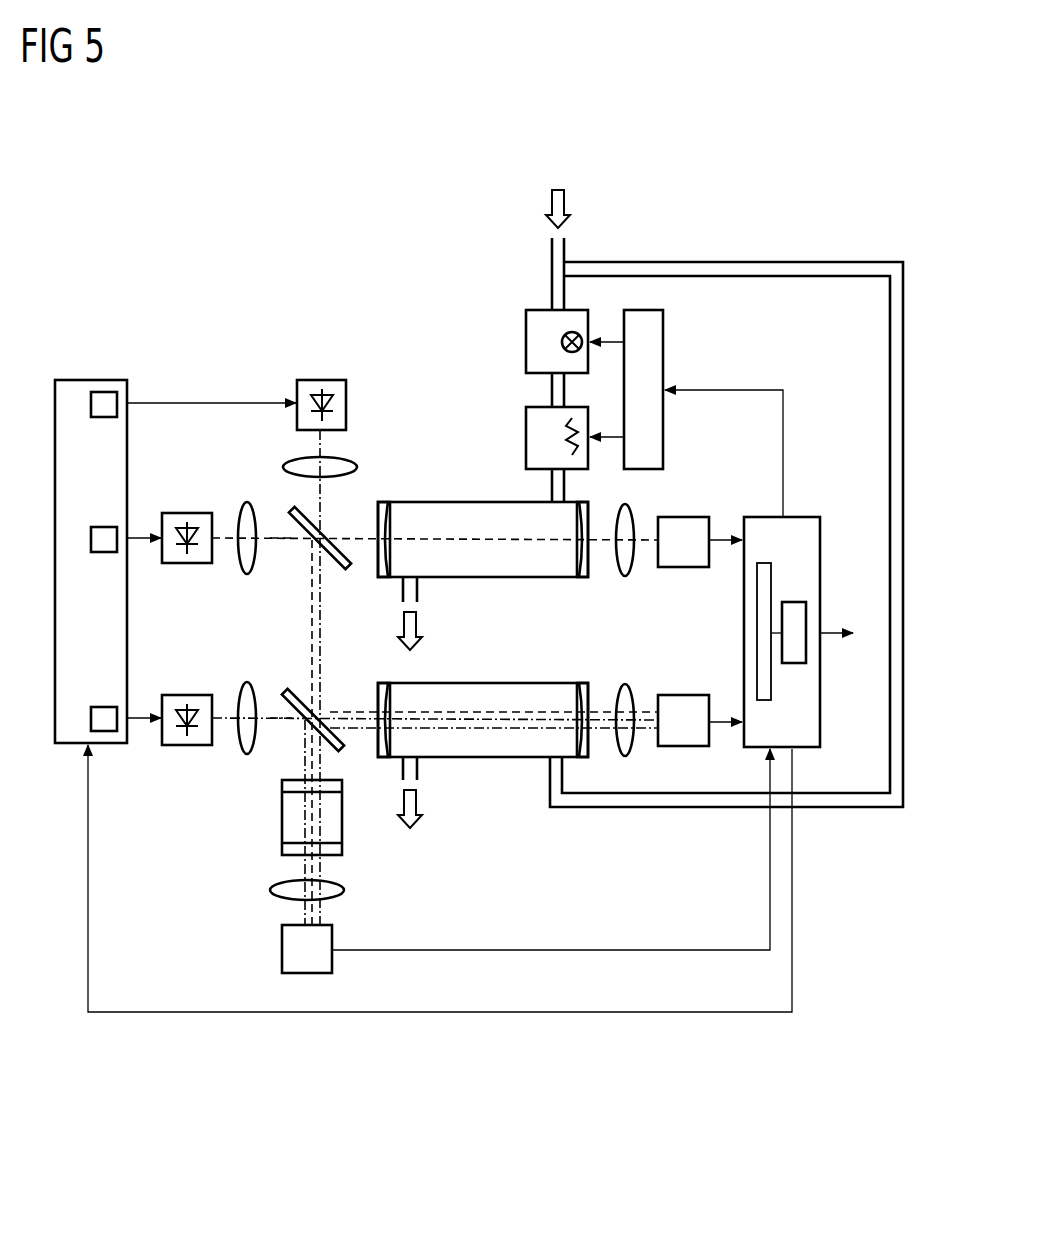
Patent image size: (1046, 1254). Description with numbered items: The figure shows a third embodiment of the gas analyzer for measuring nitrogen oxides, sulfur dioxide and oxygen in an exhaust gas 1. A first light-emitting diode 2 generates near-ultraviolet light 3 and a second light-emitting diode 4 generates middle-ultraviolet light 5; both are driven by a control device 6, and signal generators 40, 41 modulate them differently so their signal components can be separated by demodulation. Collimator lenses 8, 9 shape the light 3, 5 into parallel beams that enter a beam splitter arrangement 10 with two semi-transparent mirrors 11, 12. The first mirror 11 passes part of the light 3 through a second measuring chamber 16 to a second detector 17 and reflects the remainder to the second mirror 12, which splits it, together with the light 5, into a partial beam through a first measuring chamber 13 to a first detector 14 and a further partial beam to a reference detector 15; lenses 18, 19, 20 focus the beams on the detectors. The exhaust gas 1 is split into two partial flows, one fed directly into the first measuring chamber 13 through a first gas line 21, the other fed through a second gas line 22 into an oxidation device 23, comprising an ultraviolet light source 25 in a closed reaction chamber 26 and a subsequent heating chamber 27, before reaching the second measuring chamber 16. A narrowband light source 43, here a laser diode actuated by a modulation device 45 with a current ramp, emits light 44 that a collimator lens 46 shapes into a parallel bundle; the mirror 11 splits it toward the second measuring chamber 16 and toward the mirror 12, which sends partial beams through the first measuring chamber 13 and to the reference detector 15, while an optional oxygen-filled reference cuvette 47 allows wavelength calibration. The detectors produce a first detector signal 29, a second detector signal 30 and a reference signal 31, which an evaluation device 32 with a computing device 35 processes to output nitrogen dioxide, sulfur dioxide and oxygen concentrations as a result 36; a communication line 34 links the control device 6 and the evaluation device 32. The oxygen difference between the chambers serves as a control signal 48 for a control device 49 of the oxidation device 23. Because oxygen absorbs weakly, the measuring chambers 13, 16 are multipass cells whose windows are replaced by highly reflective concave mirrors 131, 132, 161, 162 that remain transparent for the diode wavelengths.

The exhaust gas 1 is at (548, 208).
The first light-emitting diode 2 is at (187, 513).
The light of the first light-emitting diode 3 is at (276, 535).
The second light-emitting diode 4 is at (187, 695).
The light of the second light-emitting diode 5 is at (276, 715).
The control device 6 is at (96, 380).
The collimator lens 8 is at (247, 502).
The collimator lens 9 is at (247, 682).
The beam splitter arrangement 10 is at (287, 568).
The first semi-transparent mirror 11 is at (342, 556).
The second semi-transparent mirror 12 is at (335, 746).
The first measuring chamber 13 is at (497, 683).
The first detector 14 is at (682, 695).
The reference detector 15 is at (282, 950).
The second measuring chamber 16 is at (437, 502).
The second detector 17 is at (683, 517).
The lens 18 is at (625, 684).
The lens 19 is at (270, 890).
The lens 20 is at (629, 572).
The first gas line 21 is at (890, 340).
The second gas line 22 is at (552, 262).
The oxidation device 23 is at (507, 374).
The ultraviolet light source 25 is at (562, 340).
The reaction chamber 26 is at (526, 342).
The heating chamber 27 is at (531, 438).
The first detector signal 29 is at (722, 720).
The second detector signal 30 is at (722, 538).
The reference signal 31 is at (478, 950).
The evaluation device 32 is at (805, 517).
The communication line 34 is at (478, 1012).
The computing device 35 is at (793, 602).
The result 36 is at (832, 633).
The signal generator 40 is at (91, 540).
The signal generator 41 is at (91, 718).
The narrowband light source 43 is at (322, 380).
The light of the narrowband light source 44 is at (310, 452).
The modulation device 45 is at (91, 403).
The collimator lens 46 is at (352, 462).
The reference cuvette 47 is at (282, 818).
The control signal 48 is at (755, 390).
The control device of the oxidation device 49 is at (663, 338).
The highly reflective concave mirror 131 is at (383, 683).
The highly reflective concave mirror 132 is at (582, 683).
The highly reflective concave mirror 161 is at (390, 502).
The highly reflective concave mirror 162 is at (578, 577).